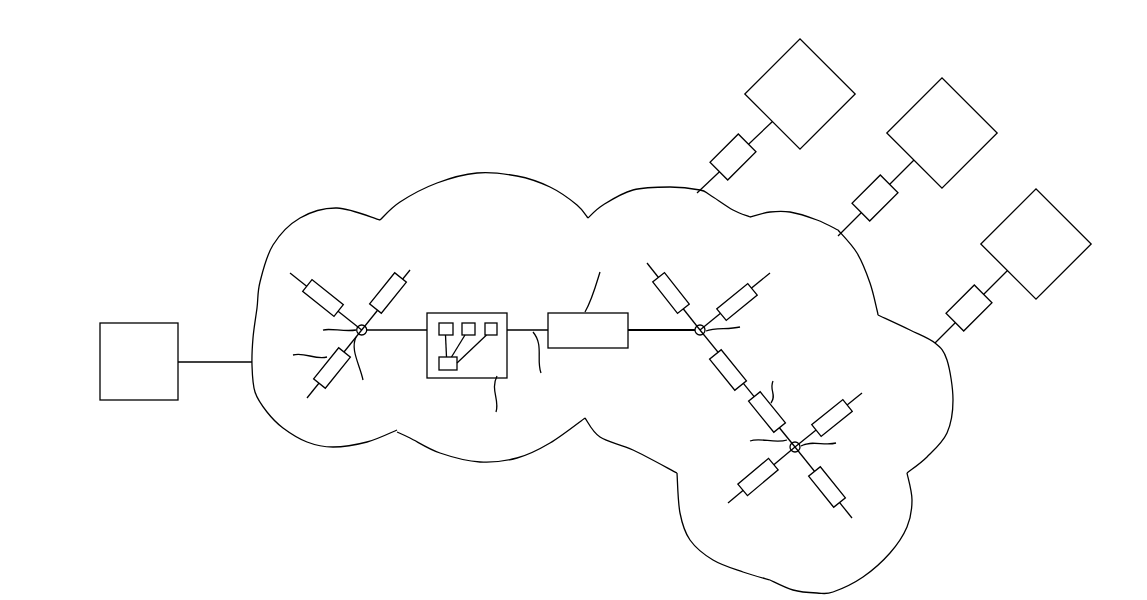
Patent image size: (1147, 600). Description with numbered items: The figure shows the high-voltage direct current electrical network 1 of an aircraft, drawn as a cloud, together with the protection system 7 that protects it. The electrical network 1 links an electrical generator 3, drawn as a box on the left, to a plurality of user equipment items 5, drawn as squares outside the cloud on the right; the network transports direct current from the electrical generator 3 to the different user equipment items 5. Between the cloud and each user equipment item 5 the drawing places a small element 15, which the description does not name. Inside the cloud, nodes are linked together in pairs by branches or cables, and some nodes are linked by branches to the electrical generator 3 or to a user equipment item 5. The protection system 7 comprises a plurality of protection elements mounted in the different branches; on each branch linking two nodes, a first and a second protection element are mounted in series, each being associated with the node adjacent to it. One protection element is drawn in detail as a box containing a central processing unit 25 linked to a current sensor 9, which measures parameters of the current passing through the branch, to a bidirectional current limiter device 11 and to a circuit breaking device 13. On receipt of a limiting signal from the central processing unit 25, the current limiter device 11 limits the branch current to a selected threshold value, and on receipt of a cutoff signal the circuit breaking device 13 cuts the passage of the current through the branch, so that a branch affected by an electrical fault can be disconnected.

The electrical network 1 is at (311, 474).
The electrical generator 3 is at (133, 322).
The user equipment item 5 is at (815, 68).
The protection system 7 is at (480, 237).
The current sensor 9 is at (441, 322).
The bidirectional current limiter device 11 is at (468, 322).
The circuit breaking device 13 is at (491, 322).
The gateway 15 is at (722, 148).
The central processing unit 25 is at (445, 371).